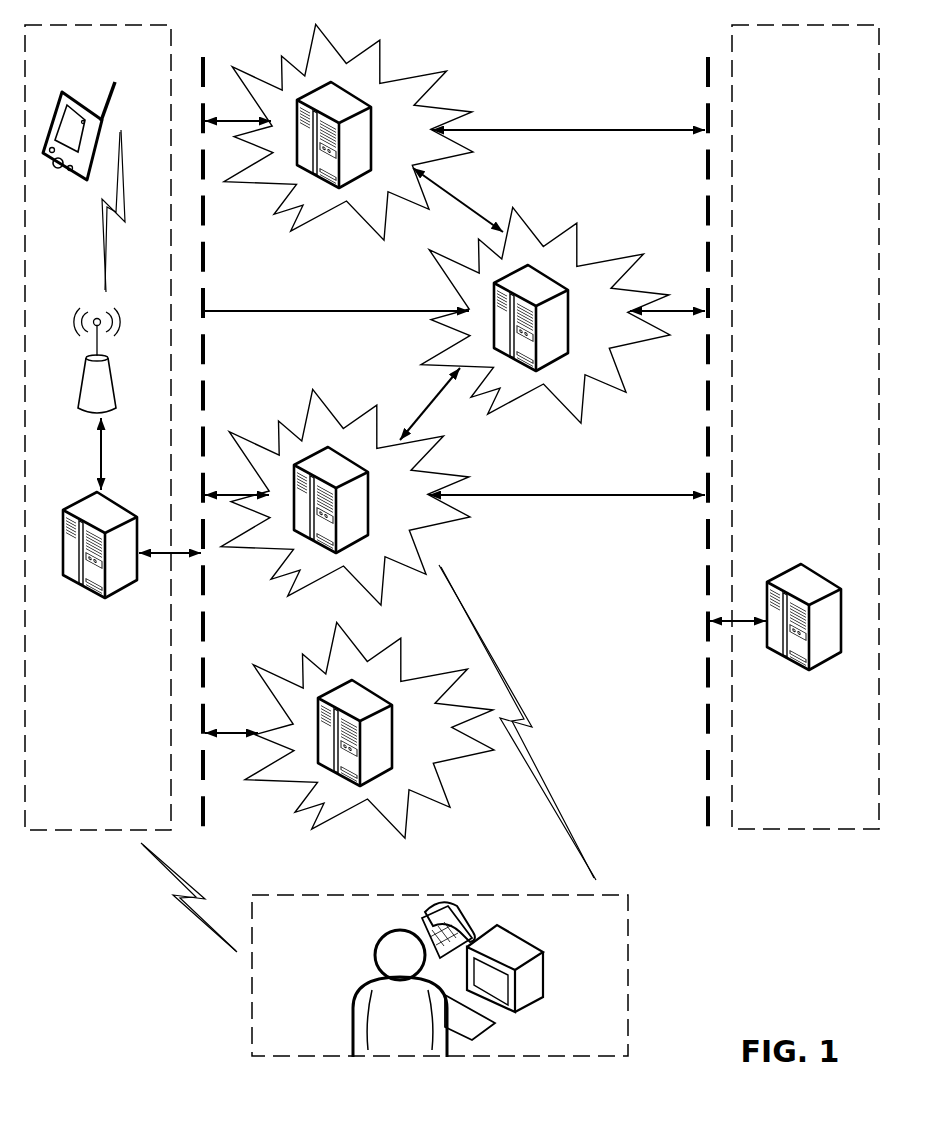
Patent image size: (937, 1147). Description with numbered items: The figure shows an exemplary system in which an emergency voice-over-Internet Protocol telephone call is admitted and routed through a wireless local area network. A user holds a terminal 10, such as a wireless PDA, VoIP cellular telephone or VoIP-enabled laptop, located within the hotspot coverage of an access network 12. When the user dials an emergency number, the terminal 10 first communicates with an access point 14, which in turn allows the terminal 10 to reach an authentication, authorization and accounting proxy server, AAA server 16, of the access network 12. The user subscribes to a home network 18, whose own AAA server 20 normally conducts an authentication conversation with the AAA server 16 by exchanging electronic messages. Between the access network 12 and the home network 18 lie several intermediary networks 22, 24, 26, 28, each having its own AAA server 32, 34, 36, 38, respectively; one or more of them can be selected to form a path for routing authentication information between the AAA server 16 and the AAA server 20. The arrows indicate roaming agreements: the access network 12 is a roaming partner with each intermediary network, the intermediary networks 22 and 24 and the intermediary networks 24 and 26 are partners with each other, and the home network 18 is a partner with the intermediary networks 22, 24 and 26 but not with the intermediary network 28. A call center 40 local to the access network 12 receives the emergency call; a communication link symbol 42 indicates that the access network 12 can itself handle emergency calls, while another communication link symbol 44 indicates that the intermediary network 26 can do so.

The terminal 10 is at (72, 88).
The access network 12 is at (75, 832).
The access point 14 is at (80, 381).
The AAA server 16 is at (80, 500).
The home network 18 is at (813, 831).
The AAA server 20 is at (815, 575).
The intermediary network 22 is at (362, 220).
The intermediary network 24 is at (580, 245).
The intermediary network 26 is at (427, 527).
The intermediary network 28 is at (288, 783).
The AAA server 32 is at (373, 135).
The AAA server 34 is at (568, 310).
The AAA server 36 is at (370, 504).
The AAA server 38 is at (392, 727).
The call center 40 is at (302, 1058).
The communication link symbol 42 is at (210, 932).
The communication link symbol 44 is at (548, 780).